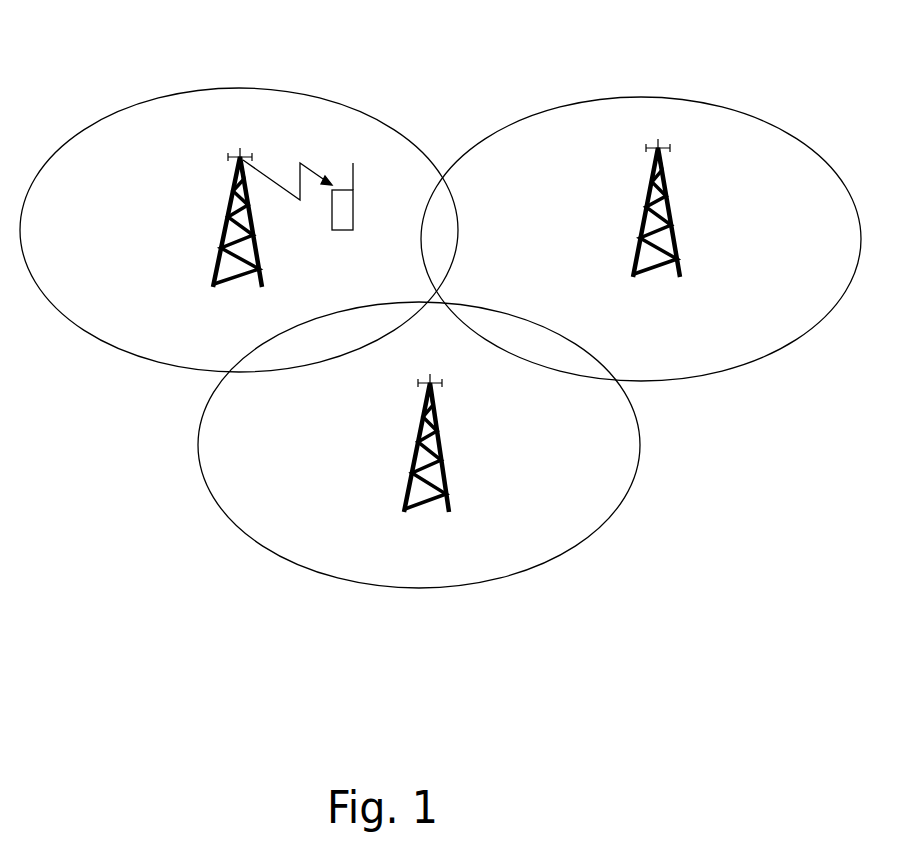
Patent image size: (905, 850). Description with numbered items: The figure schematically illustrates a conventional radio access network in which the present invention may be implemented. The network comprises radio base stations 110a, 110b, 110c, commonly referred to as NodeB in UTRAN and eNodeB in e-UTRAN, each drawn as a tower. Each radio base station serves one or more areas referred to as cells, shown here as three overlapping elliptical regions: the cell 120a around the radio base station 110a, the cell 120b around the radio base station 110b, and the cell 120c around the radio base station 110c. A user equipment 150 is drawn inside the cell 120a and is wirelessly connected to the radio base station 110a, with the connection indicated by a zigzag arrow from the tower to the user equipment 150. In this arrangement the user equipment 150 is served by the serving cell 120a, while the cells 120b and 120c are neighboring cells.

The serving cell 120a is at (137, 177).
The neighboring cell 120b is at (833, 214).
The neighboring cell 120c is at (318, 535).
The radio base station 110a is at (213, 267).
The radio base station 110b is at (675, 263).
The radio base station 110c is at (453, 497).
The user equipment 150 is at (332, 231).